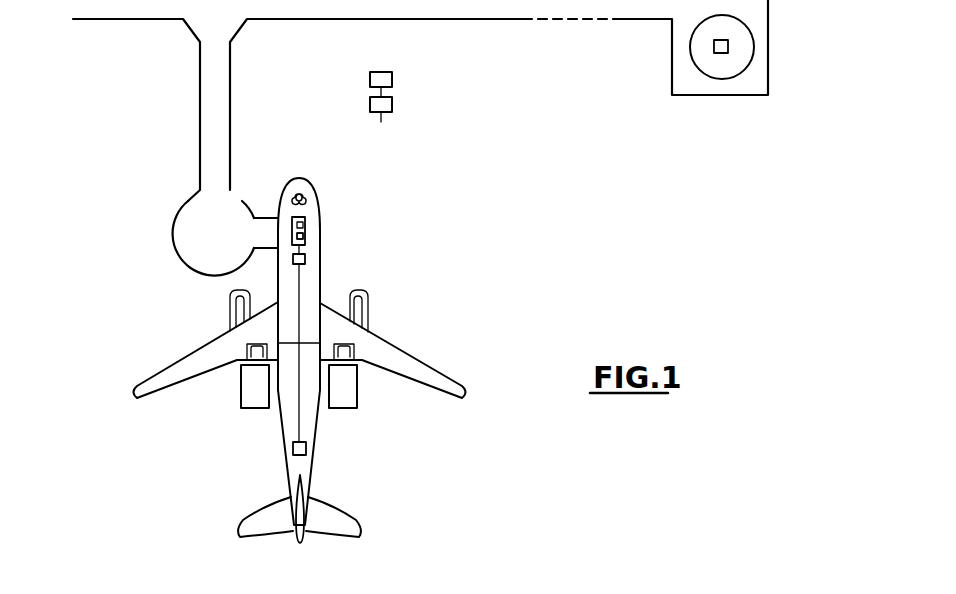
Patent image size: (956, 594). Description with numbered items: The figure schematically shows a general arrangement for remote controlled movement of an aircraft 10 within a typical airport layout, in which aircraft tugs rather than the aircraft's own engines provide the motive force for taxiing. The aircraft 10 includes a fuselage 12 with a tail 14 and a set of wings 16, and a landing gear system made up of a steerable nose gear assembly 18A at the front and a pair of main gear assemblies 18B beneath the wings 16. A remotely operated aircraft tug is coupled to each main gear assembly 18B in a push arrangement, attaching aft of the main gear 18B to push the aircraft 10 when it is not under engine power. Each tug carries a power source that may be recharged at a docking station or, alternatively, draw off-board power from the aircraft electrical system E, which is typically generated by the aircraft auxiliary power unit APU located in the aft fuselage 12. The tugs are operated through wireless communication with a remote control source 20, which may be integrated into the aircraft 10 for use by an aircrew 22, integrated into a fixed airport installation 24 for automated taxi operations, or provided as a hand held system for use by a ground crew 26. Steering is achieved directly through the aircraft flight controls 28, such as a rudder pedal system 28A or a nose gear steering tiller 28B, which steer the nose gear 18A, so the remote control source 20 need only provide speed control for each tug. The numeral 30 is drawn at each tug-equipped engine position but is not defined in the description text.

The aircraft 10 is at (340, 341).
The fuselage 12 is at (282, 408).
The tail 14 is at (330, 508).
The wings 16 is at (152, 388).
The nose gear assembly 18A is at (318, 196).
The main gear assemblies 18B is at (250, 350).
The remote control source 20 is at (728, 45).
The aircrew 22 is at (306, 258).
The fixed airport installation 24 is at (698, 38).
The ground crew 26 is at (392, 80).
The aircraft flight controls 28 is at (305, 230).
The rudder pedal system 28A is at (307, 222).
The nose gear steering tiller 28B is at (300, 236).
The engine 30 is at (242, 385).
The aircraft electrical system E is at (301, 422).
The aircraft auxiliary power unit APU is at (307, 448).